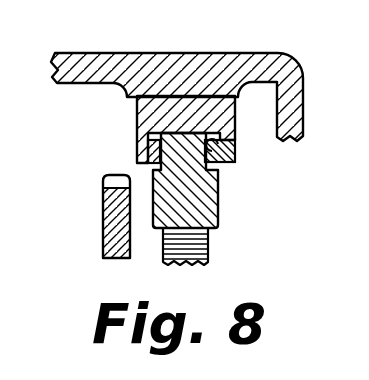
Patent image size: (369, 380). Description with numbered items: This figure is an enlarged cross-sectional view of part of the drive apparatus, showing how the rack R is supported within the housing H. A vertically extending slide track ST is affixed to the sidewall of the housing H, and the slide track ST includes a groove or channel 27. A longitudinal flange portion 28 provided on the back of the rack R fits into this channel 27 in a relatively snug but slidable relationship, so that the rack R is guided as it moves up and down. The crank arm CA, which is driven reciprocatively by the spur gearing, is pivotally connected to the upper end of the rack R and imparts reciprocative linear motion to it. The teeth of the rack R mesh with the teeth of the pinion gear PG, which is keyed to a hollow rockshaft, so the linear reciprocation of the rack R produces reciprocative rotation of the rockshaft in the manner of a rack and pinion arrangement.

The housing H is at (240, 54).
The slide track ST is at (148, 114).
The longitudinal flange portion 28 is at (151, 143).
The groove or channel 27 is at (233, 157).
The rack R is at (200, 193).
The crank arm CA is at (110, 215).
The pinion gear PG is at (209, 245).